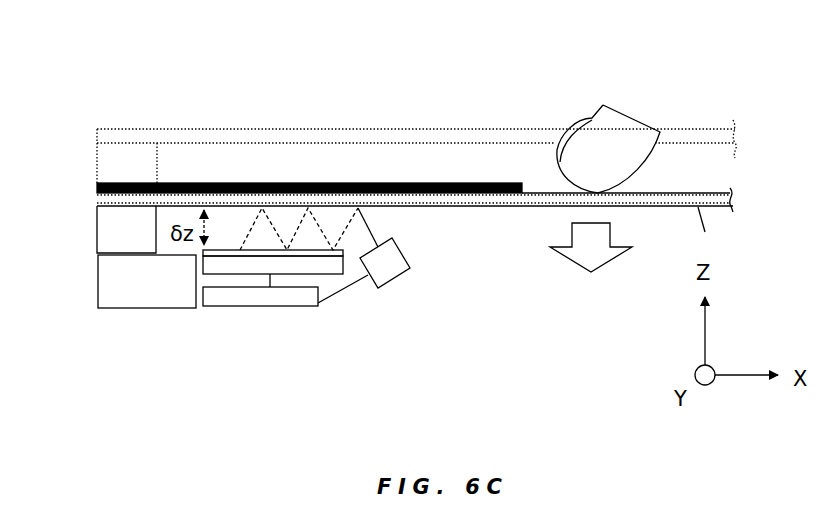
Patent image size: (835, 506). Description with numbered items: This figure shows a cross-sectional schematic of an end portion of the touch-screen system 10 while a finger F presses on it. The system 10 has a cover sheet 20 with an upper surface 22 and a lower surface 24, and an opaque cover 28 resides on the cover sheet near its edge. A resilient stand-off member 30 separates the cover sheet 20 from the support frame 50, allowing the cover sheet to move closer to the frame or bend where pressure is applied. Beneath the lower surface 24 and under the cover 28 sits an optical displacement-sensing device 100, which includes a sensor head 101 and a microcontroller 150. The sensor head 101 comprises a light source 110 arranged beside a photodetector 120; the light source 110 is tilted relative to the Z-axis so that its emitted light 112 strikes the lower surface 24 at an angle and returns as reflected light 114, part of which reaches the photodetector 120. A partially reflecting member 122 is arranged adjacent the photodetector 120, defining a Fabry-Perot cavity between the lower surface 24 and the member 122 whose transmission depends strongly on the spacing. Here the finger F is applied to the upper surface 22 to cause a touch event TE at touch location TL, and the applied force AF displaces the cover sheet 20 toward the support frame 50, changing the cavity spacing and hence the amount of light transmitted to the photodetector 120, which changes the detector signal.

The touch-screen system 10 is at (108, 78).
The cover sheet 20 is at (545, 198).
The upper surface 22 is at (687, 193).
The lower surface 24 is at (705, 232).
The cover 28 is at (410, 183).
The stand-off member 30 is at (97, 227).
The support frame 50 is at (160, 297).
The optical displacement-sensing device 100 is at (206, 324).
The sensor head 101 is at (377, 302).
The light source 110 is at (397, 280).
The light 112 is at (370, 225).
The reflected light 114 is at (287, 222).
The photodetector 120 is at (333, 275).
The partially reflecting member 122 is at (226, 252).
The microcontroller 150 is at (243, 307).
The finger F is at (593, 118).
The touch event TE is at (572, 198).
The touch location TL is at (598, 193).
The applied force AF is at (591, 272).